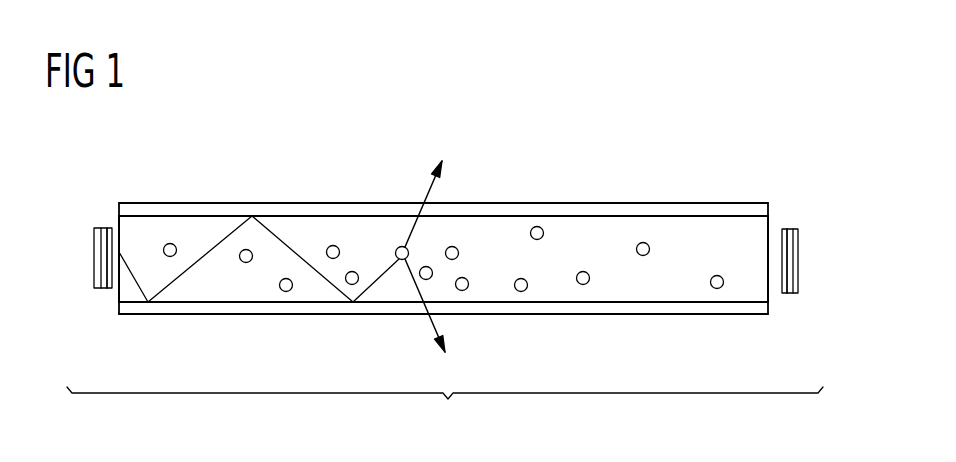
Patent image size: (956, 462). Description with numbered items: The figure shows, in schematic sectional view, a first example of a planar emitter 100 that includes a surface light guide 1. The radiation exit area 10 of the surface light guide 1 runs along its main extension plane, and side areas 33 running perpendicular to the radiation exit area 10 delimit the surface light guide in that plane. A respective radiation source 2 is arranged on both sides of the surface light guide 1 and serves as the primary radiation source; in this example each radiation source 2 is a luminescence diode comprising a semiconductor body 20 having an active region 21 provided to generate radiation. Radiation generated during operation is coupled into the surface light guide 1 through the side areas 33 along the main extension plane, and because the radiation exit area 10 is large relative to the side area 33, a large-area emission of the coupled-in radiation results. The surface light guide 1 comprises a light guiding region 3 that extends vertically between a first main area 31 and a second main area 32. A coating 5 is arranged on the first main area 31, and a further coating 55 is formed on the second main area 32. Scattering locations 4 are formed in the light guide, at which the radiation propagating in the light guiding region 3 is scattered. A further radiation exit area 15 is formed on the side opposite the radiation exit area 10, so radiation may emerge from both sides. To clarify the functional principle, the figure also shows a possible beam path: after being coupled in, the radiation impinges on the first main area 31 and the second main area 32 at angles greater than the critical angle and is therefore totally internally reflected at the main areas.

The surface light guide 1 is at (750, 152).
The radiation source 2 is at (93, 283).
The light guiding region 3 is at (758, 237).
The scattering locations 4 is at (410, 253).
The coating 5 is at (688, 213).
The radiation exit area 10 is at (596, 204).
The further radiation exit area 15 is at (638, 315).
The semiconductor body 20 is at (100, 266).
The active region 21 is at (100, 237).
The first main area 31 is at (521, 217).
The second main area 32 is at (527, 303).
The side areas 33 is at (119, 216).
The further coating 55 is at (258, 303).
The planar emitter 100 is at (445, 410).